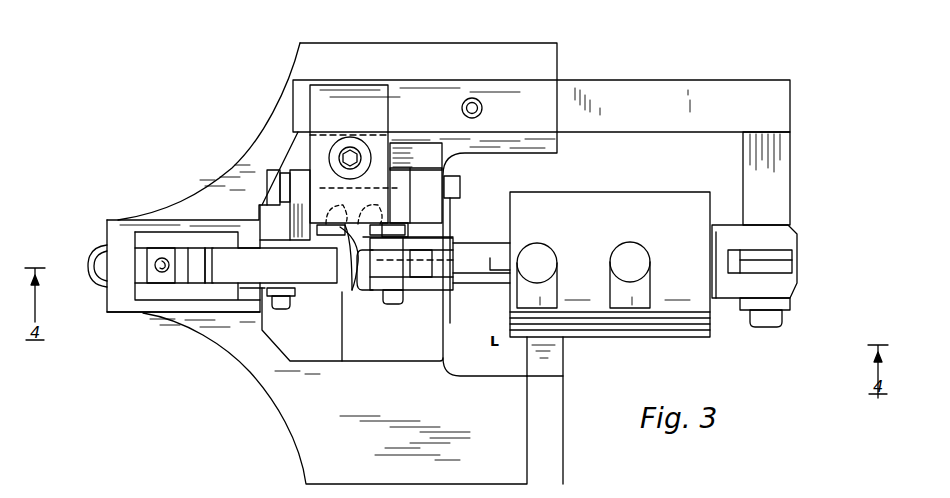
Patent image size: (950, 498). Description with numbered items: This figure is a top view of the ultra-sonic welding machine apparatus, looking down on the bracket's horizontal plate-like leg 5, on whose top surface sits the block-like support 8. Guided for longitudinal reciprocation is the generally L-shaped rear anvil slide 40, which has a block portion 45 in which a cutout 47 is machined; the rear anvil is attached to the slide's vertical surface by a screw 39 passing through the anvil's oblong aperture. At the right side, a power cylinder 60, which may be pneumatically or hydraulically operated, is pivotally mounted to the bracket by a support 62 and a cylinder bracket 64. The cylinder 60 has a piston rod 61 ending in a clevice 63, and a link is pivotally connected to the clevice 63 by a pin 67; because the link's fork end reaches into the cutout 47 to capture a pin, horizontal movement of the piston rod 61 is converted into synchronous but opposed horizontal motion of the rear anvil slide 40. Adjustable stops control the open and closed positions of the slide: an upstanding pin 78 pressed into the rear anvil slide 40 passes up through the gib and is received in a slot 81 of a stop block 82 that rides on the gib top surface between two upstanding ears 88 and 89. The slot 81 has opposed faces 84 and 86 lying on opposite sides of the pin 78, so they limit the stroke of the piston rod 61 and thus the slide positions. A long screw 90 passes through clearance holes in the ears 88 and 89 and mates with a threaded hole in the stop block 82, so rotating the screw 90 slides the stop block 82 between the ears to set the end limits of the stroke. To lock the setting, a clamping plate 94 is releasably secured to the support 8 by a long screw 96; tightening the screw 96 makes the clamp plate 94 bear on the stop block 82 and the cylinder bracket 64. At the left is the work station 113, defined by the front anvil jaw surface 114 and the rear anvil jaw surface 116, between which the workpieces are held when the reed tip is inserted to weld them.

The horizontal plate-like leg 5 is at (520, 415).
The block-like support 8 is at (418, 150).
The screw 39 is at (278, 300).
The rear anvil slide 40 is at (368, 370).
The block portion 45 is at (418, 353).
The cutout 47 is at (357, 294).
The power cylinder 60 is at (663, 318).
The piston rod 61 is at (473, 272).
The support 62 is at (775, 158).
The clevice 63 is at (437, 290).
The cylinder bracket 64 is at (636, 88).
The pin 67 is at (392, 303).
The upstanding pin 78 is at (367, 202).
The slot 81 is at (356, 272).
The stop block 82 is at (325, 224).
The face 84 is at (360, 202).
The face 86 is at (386, 188).
The upstanding ear 88 is at (263, 203).
The upstanding ear 89 is at (418, 232).
The long screw 90 is at (267, 170).
The long screw 96 is at (340, 157).
The clamping plate 94 is at (350, 88).
The work station 113 is at (200, 260).
The front anvil jaw surface 114 is at (190, 309).
The rear anvil jaw surface 116 is at (195, 272).